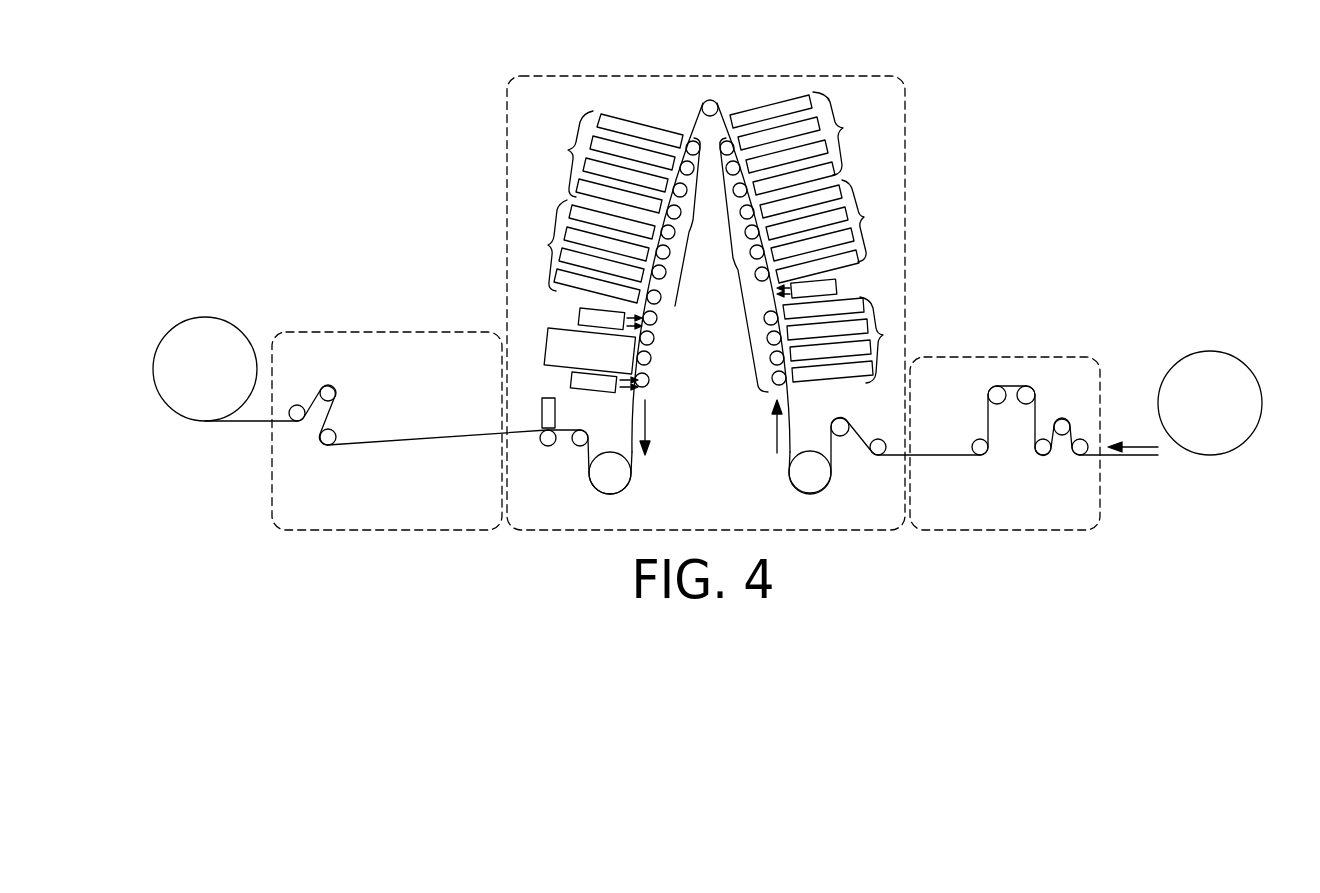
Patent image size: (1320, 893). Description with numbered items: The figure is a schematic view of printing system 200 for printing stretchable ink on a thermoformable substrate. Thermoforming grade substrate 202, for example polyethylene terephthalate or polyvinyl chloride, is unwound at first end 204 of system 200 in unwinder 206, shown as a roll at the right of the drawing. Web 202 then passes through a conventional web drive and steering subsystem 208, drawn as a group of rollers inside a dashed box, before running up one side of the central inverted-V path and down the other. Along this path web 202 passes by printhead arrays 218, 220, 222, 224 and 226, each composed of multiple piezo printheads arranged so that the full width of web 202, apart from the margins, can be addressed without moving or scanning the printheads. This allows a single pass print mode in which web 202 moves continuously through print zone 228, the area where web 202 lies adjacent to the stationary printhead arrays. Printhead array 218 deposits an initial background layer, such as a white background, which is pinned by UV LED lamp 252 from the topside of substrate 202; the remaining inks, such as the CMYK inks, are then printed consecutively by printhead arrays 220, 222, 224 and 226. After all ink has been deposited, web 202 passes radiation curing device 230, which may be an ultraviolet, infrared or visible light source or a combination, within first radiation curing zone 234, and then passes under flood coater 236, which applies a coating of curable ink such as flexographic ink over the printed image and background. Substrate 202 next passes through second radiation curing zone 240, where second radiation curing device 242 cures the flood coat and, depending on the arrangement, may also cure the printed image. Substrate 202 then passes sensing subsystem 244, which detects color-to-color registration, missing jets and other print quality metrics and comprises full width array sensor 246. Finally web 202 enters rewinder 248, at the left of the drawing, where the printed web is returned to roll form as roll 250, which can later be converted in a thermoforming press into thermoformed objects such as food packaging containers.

The printing system 200 is at (701, 277).
The thermoforming grade substrate 202 is at (1143, 458).
The first end 204 is at (1201, 347).
The unwinder 206 is at (1250, 348).
The web drive and steering subsystem 208 is at (1019, 346).
The printhead array 218 is at (883, 335).
The printhead array 220 is at (865, 218).
The printhead array 222 is at (843, 128).
The printhead array 224 is at (567, 150).
The printhead array 226 is at (548, 245).
The print zone 228 is at (690, 229).
The radiation curing device 230 is at (580, 316).
The first radiation curing zone 234 is at (666, 310).
The flood coater 236 is at (548, 343).
The second radiation curing zone 240 is at (650, 400).
The second radiation curing device 242 is at (572, 379).
The sensing subsystem 244 is at (490, 399).
The full width array sensor 246 is at (542, 413).
The rewinder 248 is at (188, 317).
The roll 250 is at (155, 323).
The UV LED lamp 252 is at (838, 286).